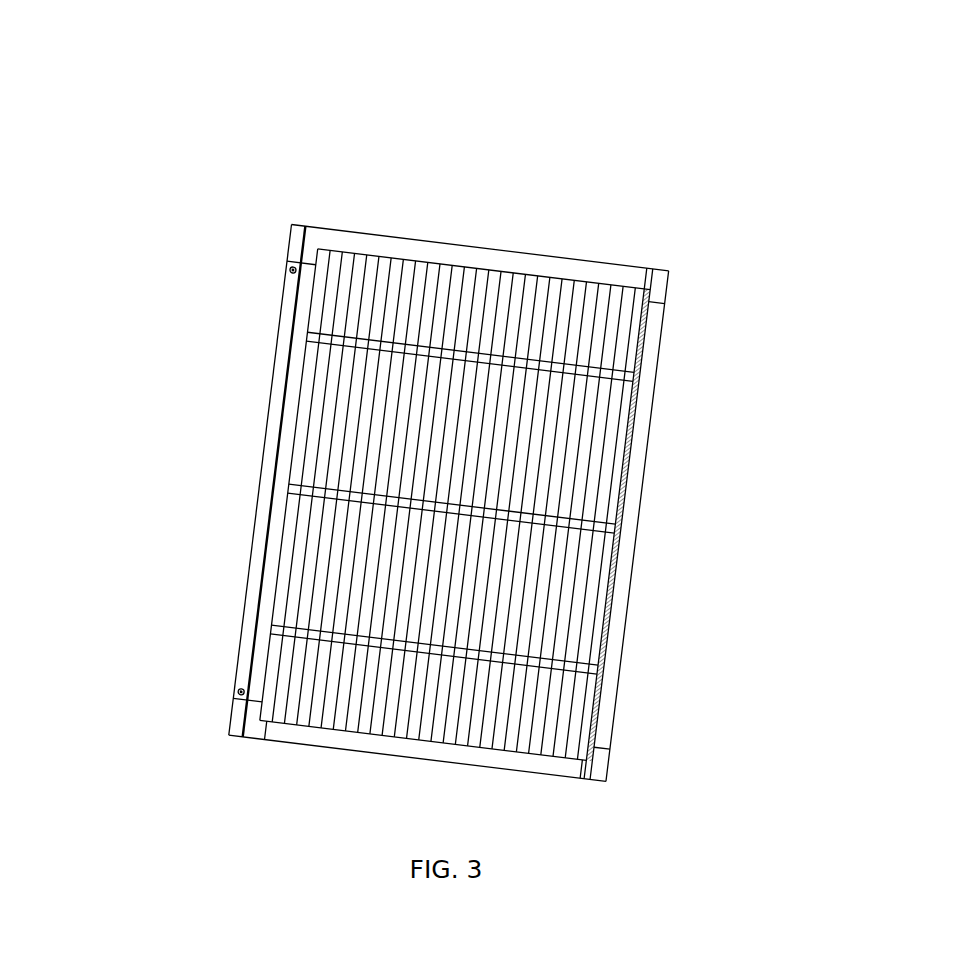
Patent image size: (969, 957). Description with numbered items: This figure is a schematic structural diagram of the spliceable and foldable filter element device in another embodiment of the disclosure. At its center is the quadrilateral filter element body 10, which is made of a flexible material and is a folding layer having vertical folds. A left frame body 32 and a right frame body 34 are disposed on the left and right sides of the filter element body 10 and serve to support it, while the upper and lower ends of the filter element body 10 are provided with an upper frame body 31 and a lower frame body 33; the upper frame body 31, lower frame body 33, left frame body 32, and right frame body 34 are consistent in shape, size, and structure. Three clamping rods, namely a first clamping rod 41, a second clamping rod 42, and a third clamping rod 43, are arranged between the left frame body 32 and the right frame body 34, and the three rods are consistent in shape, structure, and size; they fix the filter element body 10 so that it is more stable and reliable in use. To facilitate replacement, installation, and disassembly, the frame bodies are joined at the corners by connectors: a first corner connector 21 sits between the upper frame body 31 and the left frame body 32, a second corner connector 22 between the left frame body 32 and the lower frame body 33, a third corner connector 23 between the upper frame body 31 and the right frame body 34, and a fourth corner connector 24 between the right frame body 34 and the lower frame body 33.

The quadrilateral filter element body 10 is at (490, 332).
The first corner connector 21 is at (289, 231).
The second corner connector 22 is at (236, 737).
The third corner connector 23 is at (669, 287).
The fourth corner connector 24 is at (603, 782).
The upper frame body 31 is at (371, 242).
The left frame body 32 is at (265, 474).
The lower frame body 33 is at (490, 768).
The right frame body 34 is at (634, 502).
The first clamping rod 41 is at (637, 386).
The second clamping rod 42 is at (302, 490).
The third clamping rod 43 is at (606, 690).